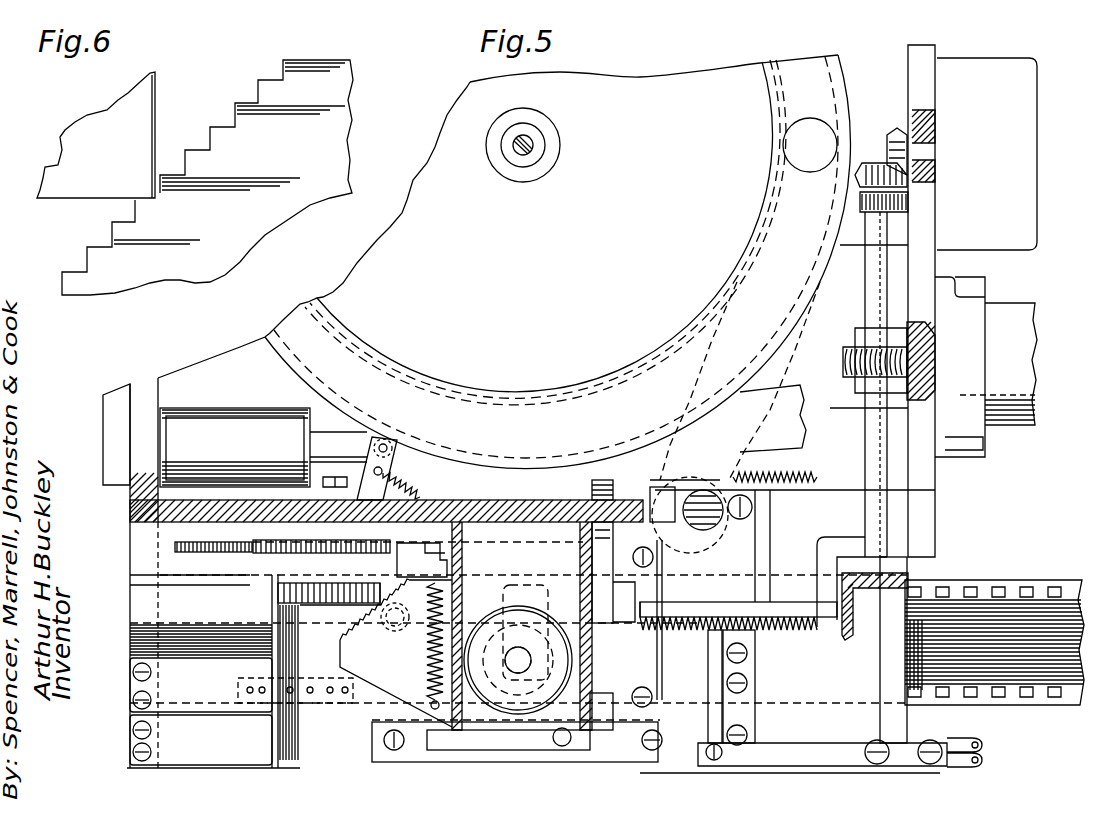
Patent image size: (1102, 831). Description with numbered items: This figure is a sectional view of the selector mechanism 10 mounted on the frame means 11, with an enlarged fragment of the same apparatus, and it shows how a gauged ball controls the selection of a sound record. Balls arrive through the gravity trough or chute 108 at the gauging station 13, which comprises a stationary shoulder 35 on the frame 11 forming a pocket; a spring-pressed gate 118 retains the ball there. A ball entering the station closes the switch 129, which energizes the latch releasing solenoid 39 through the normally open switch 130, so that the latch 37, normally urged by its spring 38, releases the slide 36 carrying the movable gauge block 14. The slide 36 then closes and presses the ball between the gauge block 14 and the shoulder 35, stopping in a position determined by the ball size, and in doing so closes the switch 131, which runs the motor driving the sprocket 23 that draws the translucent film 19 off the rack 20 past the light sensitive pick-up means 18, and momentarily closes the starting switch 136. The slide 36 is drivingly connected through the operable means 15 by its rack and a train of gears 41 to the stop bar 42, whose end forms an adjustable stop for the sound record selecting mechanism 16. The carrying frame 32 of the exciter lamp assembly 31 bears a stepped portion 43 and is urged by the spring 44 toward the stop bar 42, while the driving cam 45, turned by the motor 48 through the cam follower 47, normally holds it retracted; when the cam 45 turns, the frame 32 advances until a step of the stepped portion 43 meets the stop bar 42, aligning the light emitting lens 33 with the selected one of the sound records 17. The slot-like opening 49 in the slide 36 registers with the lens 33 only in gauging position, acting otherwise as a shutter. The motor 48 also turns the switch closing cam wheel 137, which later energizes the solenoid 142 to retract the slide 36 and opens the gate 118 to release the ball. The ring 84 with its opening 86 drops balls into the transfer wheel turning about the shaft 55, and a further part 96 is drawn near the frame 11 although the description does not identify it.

In FIG. 5, the selector mechanism 10 is at (937, 500).
In FIG. 5, the frame means 11 is at (918, 52).
In FIG. 5, the gauging station 13 is at (682, 493).
In FIG. 5, the movable gauge block 14 is at (660, 671).
In FIG. 5, the operable means 15 is at (195, 565).
In FIG. 5, the sound record selecting mechanism 16 is at (370, 723).
In FIG. 5, the sound records 17 is at (1040, 607).
In FIG. 5, the light sensitive pick-up means 18 is at (556, 720).
In FIG. 5, the translucent film 19 is at (960, 585).
In FIG. 5, the rack 20 is at (773, 632).
In FIG. 5, the driving sprocket 23 is at (238, 690).
In FIG. 5, the exciter lamp assembly 31 is at (488, 625).
In FIG. 5, the carrying frame 32 is at (478, 715).
In FIG. 5, the light emitting lens 33 is at (535, 637).
In FIG. 5, the stationary shoulder 35 is at (722, 533).
In FIG. 5, the slide 36 is at (618, 668).
In FIG. 5, the latch 37 is at (400, 465).
In FIG. 5, the spring 38 is at (400, 476).
In FIG. 5, the latch releasing solenoid 39 is at (263, 447).
In FIG. 5, the train of gears 41 is at (214, 552).
In FIG. 6, the stop bar 42 is at (96, 135).
In FIG. 5, the stop bar 42 is at (410, 545).
In FIG. 6, the stepped portion 43 is at (196, 150).
In FIG. 5, the stepped portion 43 is at (350, 648).
In FIG. 5, the spring 44 is at (428, 665).
In FIG. 5, the driving cam 45 is at (598, 480).
In FIG. 5, the cam follower 47 is at (607, 722).
In FIG. 5, the motor 48 is at (986, 367).
In FIG. 5, the slot-like opening 49 is at (528, 585).
In FIG. 5, the pin or shaft 55 is at (520, 152).
In FIG. 5, the ring 84 is at (770, 198).
In FIG. 5, the opening 86 is at (785, 145).
In FIG. 5, the hook bracket 96 is at (785, 603).
In FIG. 5, the gravity trough or chute 108 is at (630, 372).
In FIG. 5, the gate 118 is at (708, 490).
In FIG. 5, the switch 129 is at (697, 540).
In FIG. 5, the normally open switch 130 is at (185, 757).
In FIG. 5, the normally open switch 131 is at (238, 753).
In FIG. 5, the starting switch 136 is at (188, 667).
In FIG. 5, the switch closing cam wheel 137 is at (987, 154).
In FIG. 5, the solenoid 142 is at (308, 585).